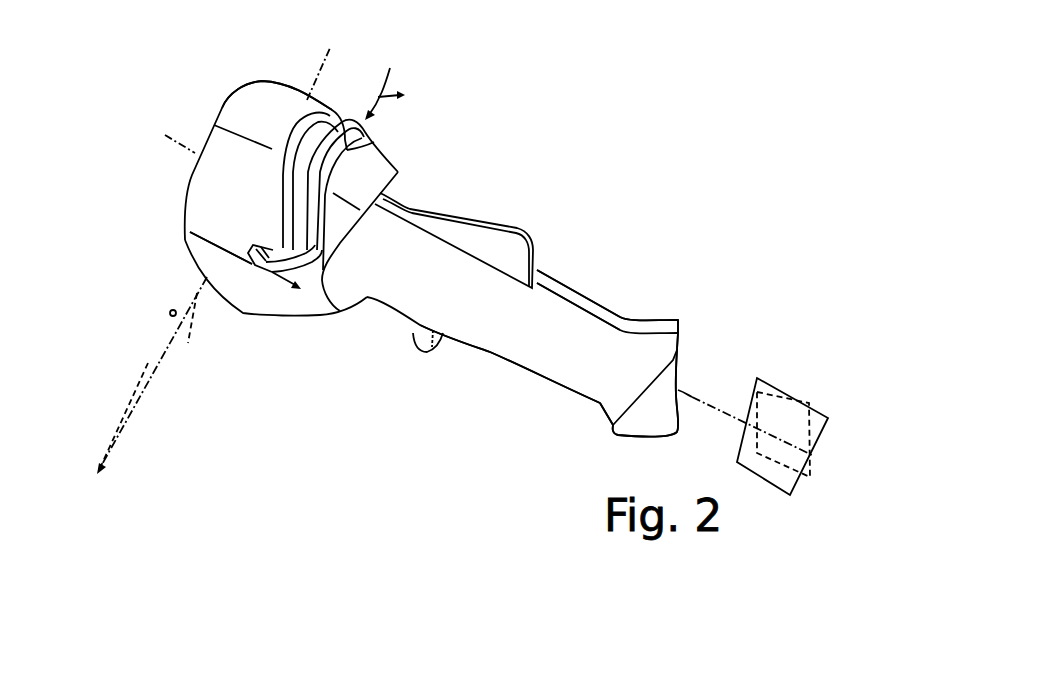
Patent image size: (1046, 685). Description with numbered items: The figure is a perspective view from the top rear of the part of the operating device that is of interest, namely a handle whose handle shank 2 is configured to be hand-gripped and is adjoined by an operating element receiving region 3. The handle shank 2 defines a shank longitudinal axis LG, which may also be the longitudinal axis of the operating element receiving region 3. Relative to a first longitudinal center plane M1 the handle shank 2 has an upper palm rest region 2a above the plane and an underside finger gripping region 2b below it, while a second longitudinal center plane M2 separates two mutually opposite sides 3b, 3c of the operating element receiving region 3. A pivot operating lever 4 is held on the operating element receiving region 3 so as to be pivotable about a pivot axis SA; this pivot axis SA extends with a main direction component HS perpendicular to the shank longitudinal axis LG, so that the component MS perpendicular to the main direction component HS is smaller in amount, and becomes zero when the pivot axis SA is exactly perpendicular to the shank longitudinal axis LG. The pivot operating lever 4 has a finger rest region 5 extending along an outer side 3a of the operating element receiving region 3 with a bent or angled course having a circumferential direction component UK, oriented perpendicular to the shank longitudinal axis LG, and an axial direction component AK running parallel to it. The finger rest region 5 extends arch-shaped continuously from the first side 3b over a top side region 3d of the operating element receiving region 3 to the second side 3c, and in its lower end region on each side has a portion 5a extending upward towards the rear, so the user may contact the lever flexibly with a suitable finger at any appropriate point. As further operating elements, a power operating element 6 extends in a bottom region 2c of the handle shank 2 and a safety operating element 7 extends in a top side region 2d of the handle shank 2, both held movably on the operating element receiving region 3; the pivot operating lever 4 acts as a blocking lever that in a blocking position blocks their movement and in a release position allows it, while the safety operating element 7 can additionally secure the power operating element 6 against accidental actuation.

The handle shank 2 is at (573, 297).
The upper palm rest region 2a is at (617, 320).
The underside finger gripping region 2b is at (573, 370).
The bottom region of the handle shank 2c is at (473, 346).
The top side region of the handle shank 2d is at (548, 270).
The operating element receiving region 3 is at (307, 100).
The outer side of the operating element receiving region 3a is at (268, 297).
The first side of the operating element receiving region 3b is at (223, 203).
The second side of the operating element receiving region 3c is at (289, 90).
The top side region of the operating element receiving region 3d is at (350, 177).
The pivot operating lever 4 is at (317, 258).
The finger rest region 5 is at (375, 146).
The portion extending upward towards the rear 5a is at (260, 273).
The power operating element 6 is at (412, 338).
The safety operating element 7 is at (478, 240).
The axial direction component AK is at (290, 292).
The circumferential direction component UK is at (389, 83).
The pivot axis SA is at (186, 334).
The direction component perpendicular to the main direction component MS is at (170, 311).
The main direction component HS is at (148, 363).
The shank longitudinal axis LG is at (698, 395).
The first longitudinal center plane M1 is at (792, 488).
The second longitudinal center plane M2 is at (810, 462).